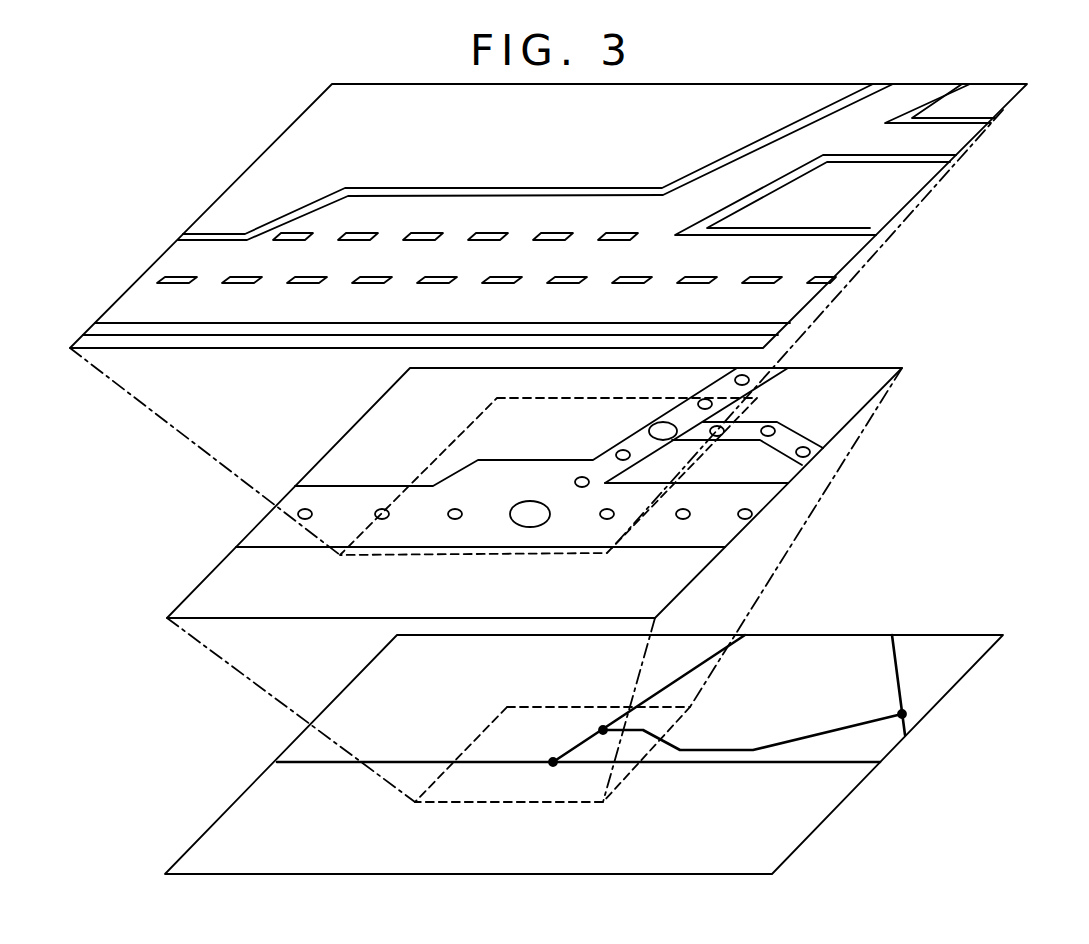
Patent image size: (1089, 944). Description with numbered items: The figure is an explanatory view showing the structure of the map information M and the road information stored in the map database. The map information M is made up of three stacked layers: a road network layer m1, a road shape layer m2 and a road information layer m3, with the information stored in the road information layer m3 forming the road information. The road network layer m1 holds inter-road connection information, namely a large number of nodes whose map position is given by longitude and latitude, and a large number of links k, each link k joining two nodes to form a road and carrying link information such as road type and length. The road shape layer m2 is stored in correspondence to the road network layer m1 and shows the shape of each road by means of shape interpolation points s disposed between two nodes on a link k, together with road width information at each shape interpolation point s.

The map information M is at (140, 170).
The road information layer m3 is at (103, 317).
The road shape layer m2 is at (208, 572).
The road network layer m1 is at (238, 795).
The shape interpolation point s is at (380, 510).
The link k is at (322, 764).